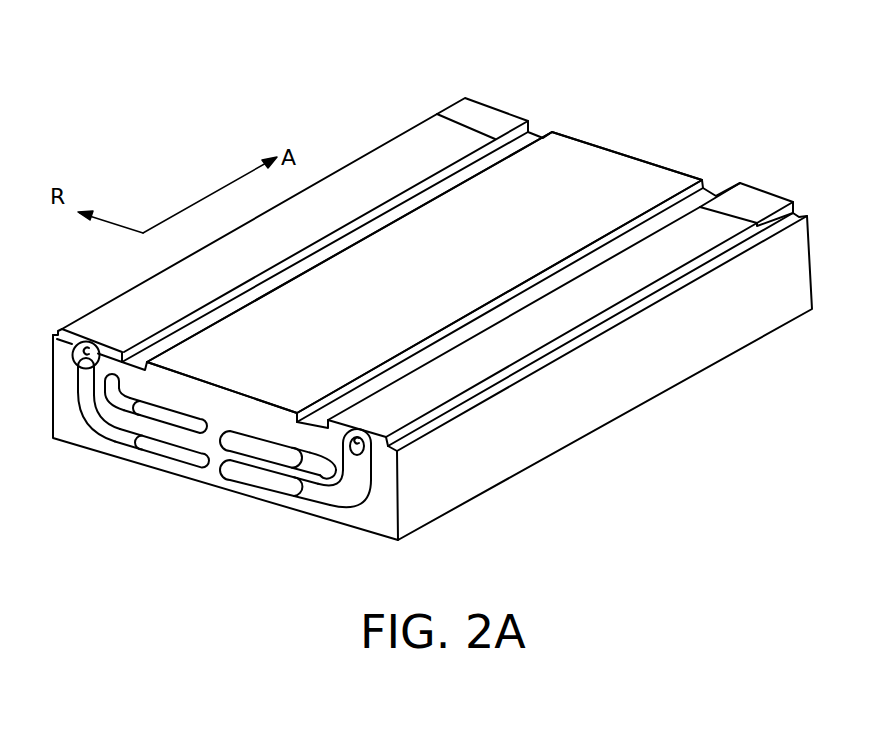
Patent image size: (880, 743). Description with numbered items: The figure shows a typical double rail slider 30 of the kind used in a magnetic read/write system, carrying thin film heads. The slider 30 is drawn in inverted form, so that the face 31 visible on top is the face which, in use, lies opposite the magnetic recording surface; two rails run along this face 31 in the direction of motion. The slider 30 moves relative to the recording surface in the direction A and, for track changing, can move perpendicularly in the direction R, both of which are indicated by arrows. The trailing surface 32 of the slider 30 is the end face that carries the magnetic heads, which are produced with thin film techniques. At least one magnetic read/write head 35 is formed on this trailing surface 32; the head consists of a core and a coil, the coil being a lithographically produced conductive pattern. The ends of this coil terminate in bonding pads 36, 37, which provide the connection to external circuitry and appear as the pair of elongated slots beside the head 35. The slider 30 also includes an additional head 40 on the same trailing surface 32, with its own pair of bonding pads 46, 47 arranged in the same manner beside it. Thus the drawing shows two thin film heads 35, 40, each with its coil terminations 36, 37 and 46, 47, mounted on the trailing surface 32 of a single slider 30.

The slider 30 is at (697, 89).
The face 31 is at (403, 302).
The trailing surface 32 is at (78, 427).
The magnetic read/write head 35 is at (373, 468).
The bonding pad 36 is at (250, 428).
The bonding pad 37 is at (268, 484).
The additional head 40 is at (78, 362).
The bonding pad 46 is at (172, 415).
The bonding pad 47 is at (184, 457).